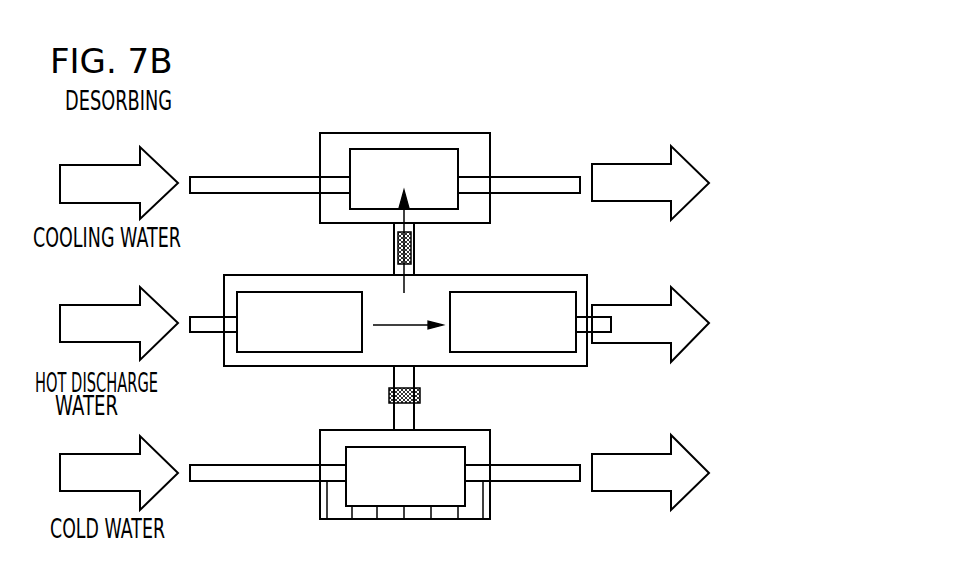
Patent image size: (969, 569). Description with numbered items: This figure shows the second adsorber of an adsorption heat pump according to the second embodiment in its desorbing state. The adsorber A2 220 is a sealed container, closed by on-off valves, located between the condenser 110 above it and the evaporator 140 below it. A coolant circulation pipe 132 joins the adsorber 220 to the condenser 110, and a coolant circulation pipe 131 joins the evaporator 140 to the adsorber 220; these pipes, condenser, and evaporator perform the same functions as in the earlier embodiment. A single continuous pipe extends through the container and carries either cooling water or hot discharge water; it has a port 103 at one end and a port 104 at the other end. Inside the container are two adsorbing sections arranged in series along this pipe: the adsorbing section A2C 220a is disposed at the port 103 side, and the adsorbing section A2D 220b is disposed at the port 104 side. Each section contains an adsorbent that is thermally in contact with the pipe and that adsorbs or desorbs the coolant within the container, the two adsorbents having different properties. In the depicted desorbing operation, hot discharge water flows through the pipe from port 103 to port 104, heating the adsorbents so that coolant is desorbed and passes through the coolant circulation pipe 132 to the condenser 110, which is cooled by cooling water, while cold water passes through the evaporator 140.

The condenser 110 is at (463, 143).
The coolant circulation pipe 132 is at (394, 232).
The adsorber A2 220 is at (406, 283).
The adsorbing section A2C 220a is at (325, 292).
The adsorbing section A2D 220b is at (555, 292).
The port 103 is at (207, 328).
The port 104 is at (597, 327).
The coolant circulation pipe 131 is at (393, 410).
The evaporator 140 is at (333, 455).